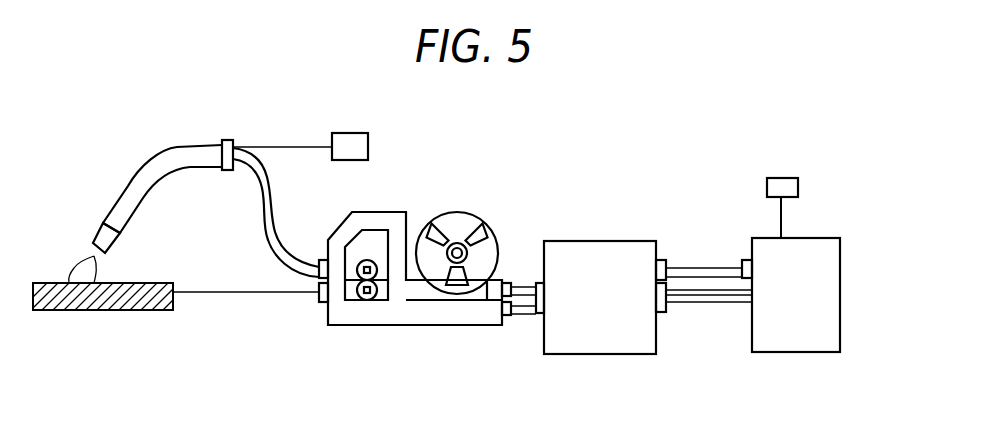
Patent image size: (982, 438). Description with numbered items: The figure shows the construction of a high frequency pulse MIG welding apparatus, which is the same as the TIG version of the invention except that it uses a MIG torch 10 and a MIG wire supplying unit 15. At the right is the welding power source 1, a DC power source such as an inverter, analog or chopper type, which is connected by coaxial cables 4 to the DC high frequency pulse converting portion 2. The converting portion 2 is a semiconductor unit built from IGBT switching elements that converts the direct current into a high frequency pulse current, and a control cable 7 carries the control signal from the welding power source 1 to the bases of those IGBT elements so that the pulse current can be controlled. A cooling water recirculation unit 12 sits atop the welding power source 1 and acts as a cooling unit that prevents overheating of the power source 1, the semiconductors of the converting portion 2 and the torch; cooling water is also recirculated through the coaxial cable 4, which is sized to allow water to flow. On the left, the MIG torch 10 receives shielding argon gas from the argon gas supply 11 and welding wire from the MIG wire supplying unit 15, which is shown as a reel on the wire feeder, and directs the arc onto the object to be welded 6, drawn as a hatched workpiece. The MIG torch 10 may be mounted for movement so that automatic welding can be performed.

The welding power source 1 is at (752, 355).
The DC high frequency pulse converting portion 2 is at (603, 240).
The coaxial cable 4 is at (708, 303).
The object to be welded 6 is at (118, 311).
The control cable 7 is at (701, 267).
The MIG torch 10 is at (178, 143).
The argon gas supply 11 is at (369, 131).
The cooling water recirculation unit 12 is at (783, 177).
The MIG wire supplying unit 15 is at (437, 208).